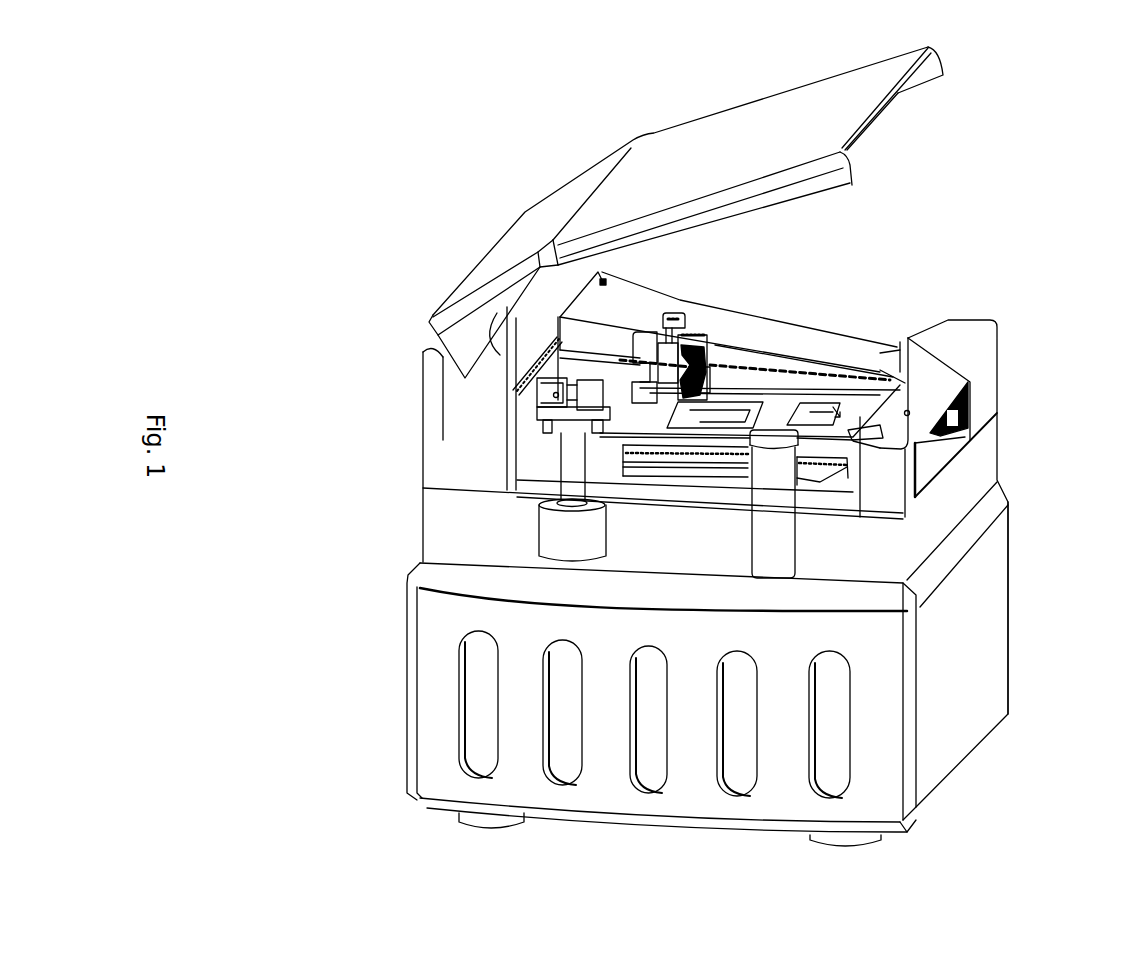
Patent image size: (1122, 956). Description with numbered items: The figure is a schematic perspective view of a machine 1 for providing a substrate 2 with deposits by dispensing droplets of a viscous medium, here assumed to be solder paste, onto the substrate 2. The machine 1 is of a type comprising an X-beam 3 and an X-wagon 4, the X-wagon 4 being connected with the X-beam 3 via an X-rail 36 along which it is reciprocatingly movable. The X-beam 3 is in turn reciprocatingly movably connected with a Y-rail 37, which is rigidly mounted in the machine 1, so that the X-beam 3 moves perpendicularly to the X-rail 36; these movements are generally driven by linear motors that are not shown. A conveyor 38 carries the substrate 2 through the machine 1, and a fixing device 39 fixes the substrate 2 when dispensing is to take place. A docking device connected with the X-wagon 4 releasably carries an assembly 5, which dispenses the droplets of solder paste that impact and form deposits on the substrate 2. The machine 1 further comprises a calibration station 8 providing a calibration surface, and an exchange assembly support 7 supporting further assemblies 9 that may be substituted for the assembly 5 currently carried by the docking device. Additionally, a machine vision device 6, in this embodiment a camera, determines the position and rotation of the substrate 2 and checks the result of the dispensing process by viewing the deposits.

The machine 1 is at (420, 262).
The substrate 2 is at (907, 340).
The X-beam 3 is at (643, 297).
The X-wagon 4 is at (687, 333).
The assembly 5 is at (710, 338).
The machine vision device 6 is at (673, 307).
The exchange assembly support 7 is at (570, 460).
The calibration station 8 is at (781, 536).
The further assemblies 9 is at (537, 417).
The X-rail 36 is at (793, 363).
The Y-rail 37 is at (537, 353).
The conveyor 38 is at (933, 453).
The fixing device 39 is at (847, 472).